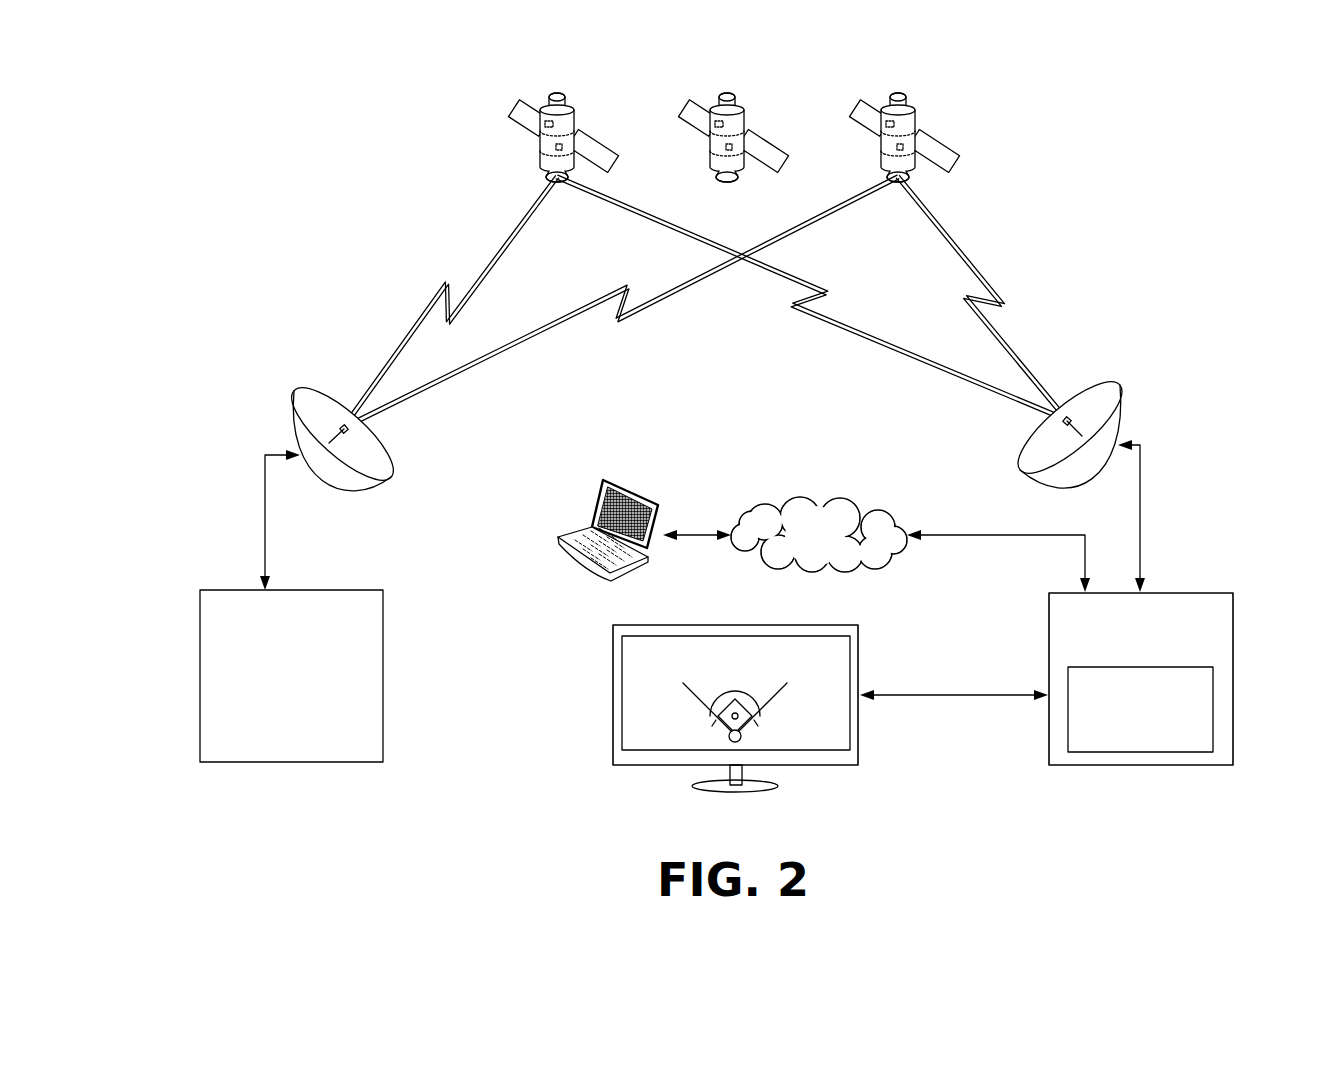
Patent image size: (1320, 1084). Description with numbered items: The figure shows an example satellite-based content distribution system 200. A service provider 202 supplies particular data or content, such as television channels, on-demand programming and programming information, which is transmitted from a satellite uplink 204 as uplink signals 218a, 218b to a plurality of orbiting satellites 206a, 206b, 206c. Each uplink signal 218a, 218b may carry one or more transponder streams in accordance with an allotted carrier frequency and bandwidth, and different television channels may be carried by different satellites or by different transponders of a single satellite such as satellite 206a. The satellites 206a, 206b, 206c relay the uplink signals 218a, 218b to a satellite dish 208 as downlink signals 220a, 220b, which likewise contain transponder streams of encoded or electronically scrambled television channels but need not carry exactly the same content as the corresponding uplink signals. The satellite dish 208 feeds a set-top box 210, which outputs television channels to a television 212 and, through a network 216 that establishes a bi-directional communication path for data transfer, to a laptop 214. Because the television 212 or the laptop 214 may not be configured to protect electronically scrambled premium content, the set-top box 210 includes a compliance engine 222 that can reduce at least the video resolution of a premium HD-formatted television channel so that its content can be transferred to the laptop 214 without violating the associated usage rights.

The system 200 is at (269, 163).
The service provider 202 is at (291, 676).
The satellite uplink 204 is at (306, 391).
The satellite 206a is at (611, 159).
The satellite 206b is at (737, 137).
The satellite 206c is at (907, 137).
The satellite dish 208 is at (1106, 388).
The STB (Set-Top Box) 210 is at (1141, 679).
The television 212 is at (735, 708).
The laptop 214 is at (603, 480).
The network 216 is at (819, 534).
The uplink signal 218a is at (513, 232).
The uplink signal 218b is at (790, 229).
The downlink signal 220a is at (722, 239).
The downlink signal 220b is at (968, 262).
The compliance engine 222 is at (1140, 709).